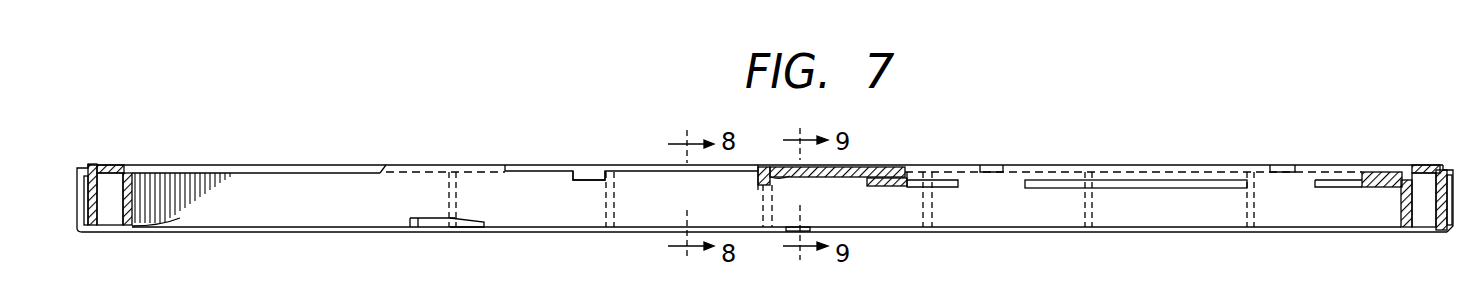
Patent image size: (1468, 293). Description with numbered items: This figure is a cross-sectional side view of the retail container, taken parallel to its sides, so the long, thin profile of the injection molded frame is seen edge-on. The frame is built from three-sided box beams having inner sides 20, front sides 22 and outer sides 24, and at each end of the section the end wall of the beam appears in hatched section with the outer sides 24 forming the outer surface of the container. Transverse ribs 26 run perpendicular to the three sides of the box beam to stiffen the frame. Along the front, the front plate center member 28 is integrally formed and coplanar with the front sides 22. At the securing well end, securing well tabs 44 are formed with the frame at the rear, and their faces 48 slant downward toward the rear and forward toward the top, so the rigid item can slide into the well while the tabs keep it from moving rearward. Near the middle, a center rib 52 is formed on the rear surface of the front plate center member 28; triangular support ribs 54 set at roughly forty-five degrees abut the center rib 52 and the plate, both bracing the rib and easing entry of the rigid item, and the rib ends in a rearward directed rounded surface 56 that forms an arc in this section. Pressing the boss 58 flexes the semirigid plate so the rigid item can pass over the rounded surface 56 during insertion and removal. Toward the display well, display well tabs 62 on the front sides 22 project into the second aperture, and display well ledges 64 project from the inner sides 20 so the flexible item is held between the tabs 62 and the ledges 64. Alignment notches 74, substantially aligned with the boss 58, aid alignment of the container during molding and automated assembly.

The inner sides 20 is at (118, 214).
The front sides 22 is at (98, 170).
The outer sides 24 is at (84, 228).
The transverse ribs 26 is at (606, 202).
The front plate center member 28 is at (206, 165).
The securing well tabs 44 is at (432, 226).
The faces 48 is at (456, 218).
The center rib 52 is at (760, 174).
The support ribs 54 is at (780, 176).
The rounded surface 56 is at (762, 187).
The boss 58 is at (832, 166).
The display well tabs 62 is at (995, 167).
The display well ledges 64 is at (940, 182).
The alignment notches 74 is at (803, 227).